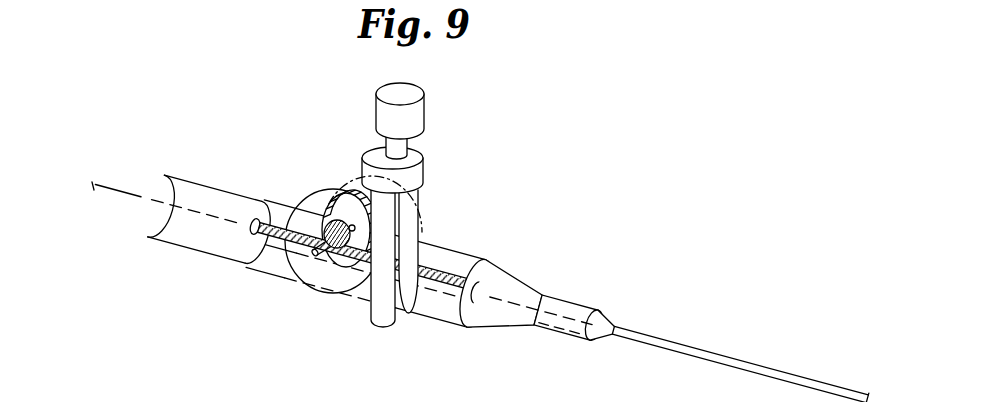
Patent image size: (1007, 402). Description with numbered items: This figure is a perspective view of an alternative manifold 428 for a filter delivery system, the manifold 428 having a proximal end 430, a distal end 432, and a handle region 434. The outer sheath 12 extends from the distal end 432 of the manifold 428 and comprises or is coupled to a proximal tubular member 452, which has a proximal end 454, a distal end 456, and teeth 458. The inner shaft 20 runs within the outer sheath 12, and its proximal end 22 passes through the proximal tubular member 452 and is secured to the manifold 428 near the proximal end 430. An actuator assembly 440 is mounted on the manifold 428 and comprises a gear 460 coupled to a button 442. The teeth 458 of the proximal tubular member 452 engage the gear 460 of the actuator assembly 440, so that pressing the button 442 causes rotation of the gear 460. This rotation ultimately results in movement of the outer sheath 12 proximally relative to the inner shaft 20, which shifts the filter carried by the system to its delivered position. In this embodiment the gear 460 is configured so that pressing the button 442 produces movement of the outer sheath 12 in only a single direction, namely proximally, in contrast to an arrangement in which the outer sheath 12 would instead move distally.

The outer sheath 12 is at (707, 359).
The inner shaft 20 is at (480, 240).
The proximal end of inner shaft 22 is at (123, 186).
The manifold 428 is at (184, 242).
The proximal end of manifold 430 is at (160, 232).
The distal end of manifold 432 is at (563, 303).
The handle region 434 is at (198, 245).
The actuator assembly 440 is at (406, 205).
The button 442 is at (421, 118).
The proximal tubular member 452 is at (358, 250).
The proximal end of proximal tubular member 454 is at (272, 242).
The distal end of proximal tubular member 456 is at (462, 302).
The teeth 458 is at (419, 236).
The gear 460 is at (318, 204).